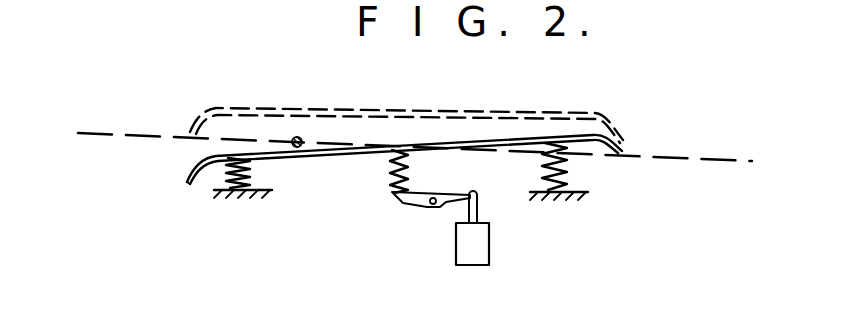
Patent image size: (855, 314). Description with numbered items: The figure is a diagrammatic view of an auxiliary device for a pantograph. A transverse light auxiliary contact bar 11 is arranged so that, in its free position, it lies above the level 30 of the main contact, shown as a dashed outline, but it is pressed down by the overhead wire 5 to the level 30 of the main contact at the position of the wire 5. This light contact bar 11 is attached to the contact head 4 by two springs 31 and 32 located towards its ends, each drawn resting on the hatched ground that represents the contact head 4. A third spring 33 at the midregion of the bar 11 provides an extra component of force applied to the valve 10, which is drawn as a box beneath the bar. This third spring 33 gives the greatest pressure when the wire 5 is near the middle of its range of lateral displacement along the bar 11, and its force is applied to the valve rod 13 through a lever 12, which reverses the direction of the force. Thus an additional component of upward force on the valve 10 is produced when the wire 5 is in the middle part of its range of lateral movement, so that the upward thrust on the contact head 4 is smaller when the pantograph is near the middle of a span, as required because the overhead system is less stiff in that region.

The contact head 4 is at (232, 196).
The overhead wire 5 is at (299, 137).
The valve 10 is at (480, 253).
The auxiliary contact bar 11 is at (460, 143).
The lever 12 is at (420, 200).
The valve rod 13 is at (477, 216).
The level of the main contact 30 is at (657, 158).
The spring 31 is at (253, 161).
The spring 32 is at (567, 176).
The third spring 33 is at (390, 175).